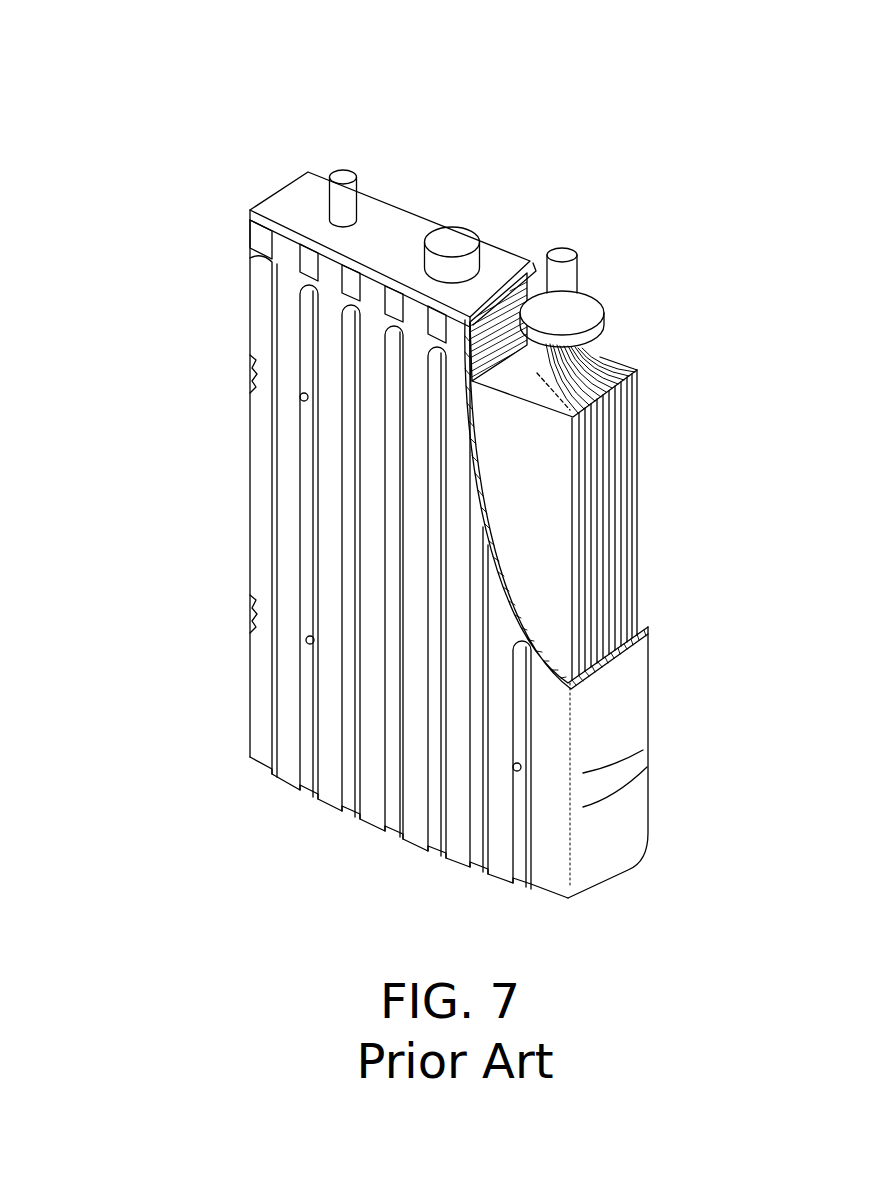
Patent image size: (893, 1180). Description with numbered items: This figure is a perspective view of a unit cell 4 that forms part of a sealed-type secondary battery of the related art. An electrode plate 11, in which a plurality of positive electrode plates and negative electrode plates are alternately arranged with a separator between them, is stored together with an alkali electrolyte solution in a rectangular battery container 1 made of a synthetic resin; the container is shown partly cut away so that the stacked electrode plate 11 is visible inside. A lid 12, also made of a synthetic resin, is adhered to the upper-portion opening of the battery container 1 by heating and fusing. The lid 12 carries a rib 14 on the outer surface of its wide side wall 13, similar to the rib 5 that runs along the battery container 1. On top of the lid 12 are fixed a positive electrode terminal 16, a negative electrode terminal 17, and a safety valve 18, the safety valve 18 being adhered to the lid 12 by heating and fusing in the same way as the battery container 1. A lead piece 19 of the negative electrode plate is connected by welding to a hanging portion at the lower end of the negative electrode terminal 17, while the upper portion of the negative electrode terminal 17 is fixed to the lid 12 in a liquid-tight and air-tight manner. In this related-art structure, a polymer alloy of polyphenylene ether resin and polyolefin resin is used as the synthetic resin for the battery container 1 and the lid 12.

The battery container 1 is at (250, 477).
The unit cell 4 is at (250, 222).
The rib 5 is at (350, 733).
The electrode plate 11 is at (637, 446).
The lid 12 is at (400, 220).
The wide side wall 13 is at (330, 267).
The rib 14 is at (298, 252).
The positive electrode terminal 16 is at (342, 177).
The negative electrode terminal 17 is at (563, 253).
The safety valve 18 is at (453, 238).
The lead piece 19 is at (610, 370).